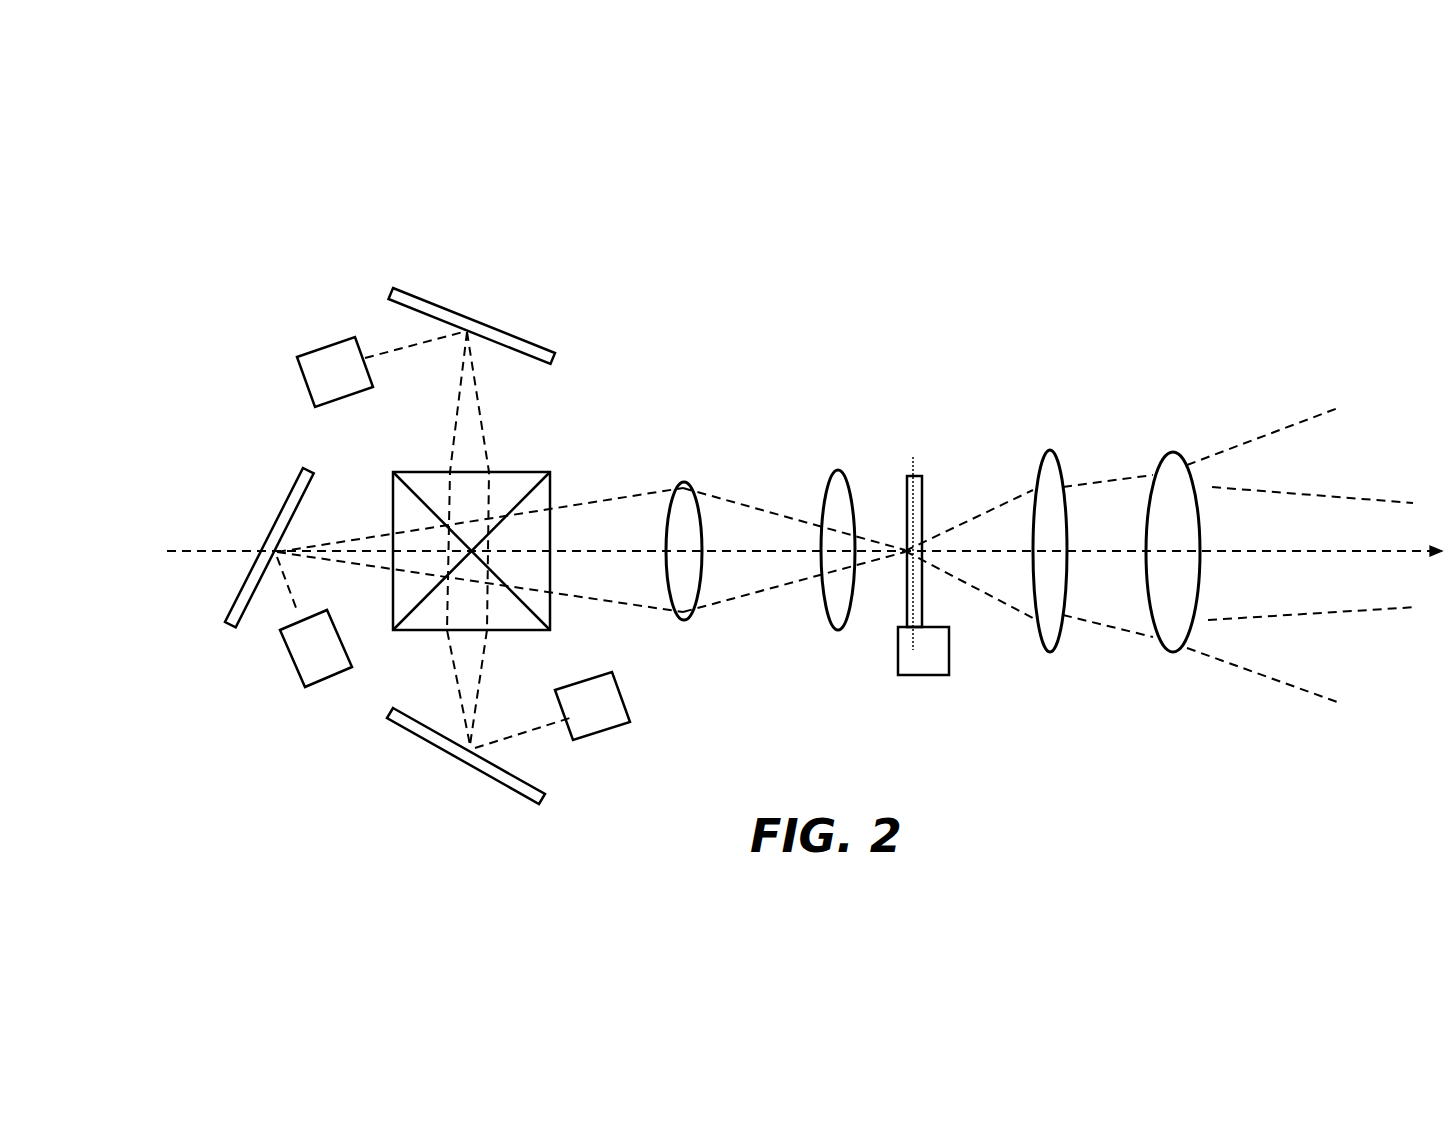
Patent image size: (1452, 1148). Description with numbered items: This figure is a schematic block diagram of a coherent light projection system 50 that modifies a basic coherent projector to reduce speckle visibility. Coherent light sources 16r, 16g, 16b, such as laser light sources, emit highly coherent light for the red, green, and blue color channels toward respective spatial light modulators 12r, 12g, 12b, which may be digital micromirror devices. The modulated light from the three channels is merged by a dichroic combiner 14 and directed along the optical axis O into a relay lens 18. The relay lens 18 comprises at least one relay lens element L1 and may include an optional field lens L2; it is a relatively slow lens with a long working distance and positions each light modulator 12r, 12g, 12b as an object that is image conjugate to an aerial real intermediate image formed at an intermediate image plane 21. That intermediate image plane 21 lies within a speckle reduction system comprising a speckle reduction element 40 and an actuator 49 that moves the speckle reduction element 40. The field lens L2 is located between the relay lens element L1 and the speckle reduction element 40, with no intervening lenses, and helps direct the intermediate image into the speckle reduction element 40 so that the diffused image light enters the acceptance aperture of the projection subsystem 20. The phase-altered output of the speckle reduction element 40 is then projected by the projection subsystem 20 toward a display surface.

The coherent light projection system 50 is at (212, 186).
The spatial light modulator 12r is at (418, 292).
The coherent light source 16r is at (312, 355).
The dichroic combiner 14 is at (520, 472).
The spatial light modulator 12g is at (225, 625).
The coherent light source 16g is at (292, 668).
The spatial light modulator 12b is at (438, 750).
The coherent light source 16b is at (607, 733).
The relay lens 18 is at (745, 549).
The relay lens element L1 is at (682, 620).
The field lens L2 is at (838, 630).
The intermediate image plane 21 is at (867, 519).
The speckle reduction element 40 is at (922, 490).
The actuator 49 is at (922, 677).
The projection subsystem 20 is at (1195, 445).
The optical axis O is at (228, 550).